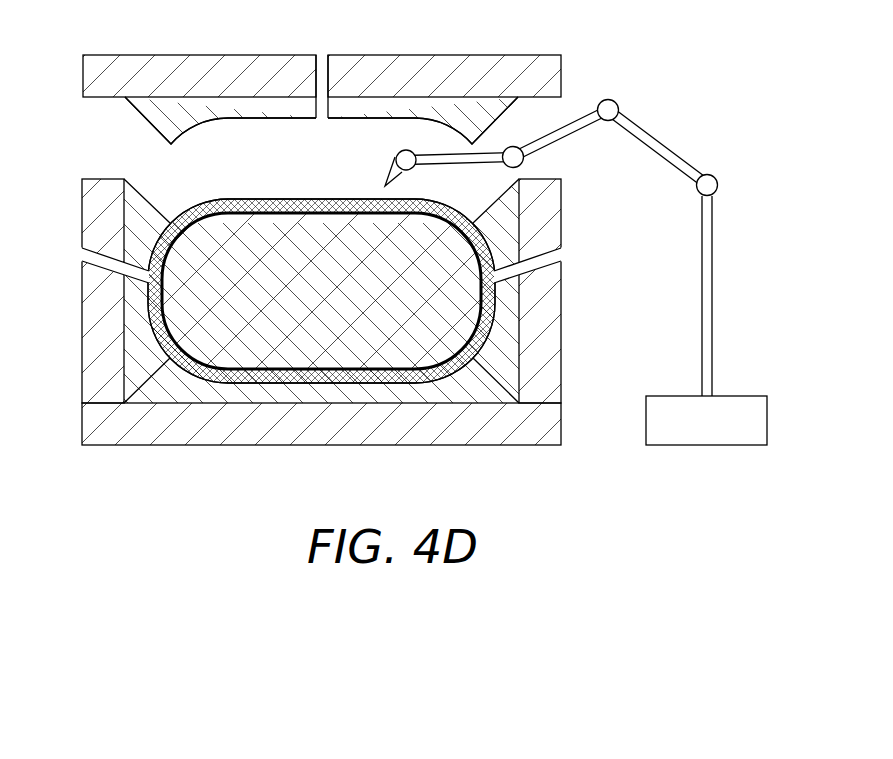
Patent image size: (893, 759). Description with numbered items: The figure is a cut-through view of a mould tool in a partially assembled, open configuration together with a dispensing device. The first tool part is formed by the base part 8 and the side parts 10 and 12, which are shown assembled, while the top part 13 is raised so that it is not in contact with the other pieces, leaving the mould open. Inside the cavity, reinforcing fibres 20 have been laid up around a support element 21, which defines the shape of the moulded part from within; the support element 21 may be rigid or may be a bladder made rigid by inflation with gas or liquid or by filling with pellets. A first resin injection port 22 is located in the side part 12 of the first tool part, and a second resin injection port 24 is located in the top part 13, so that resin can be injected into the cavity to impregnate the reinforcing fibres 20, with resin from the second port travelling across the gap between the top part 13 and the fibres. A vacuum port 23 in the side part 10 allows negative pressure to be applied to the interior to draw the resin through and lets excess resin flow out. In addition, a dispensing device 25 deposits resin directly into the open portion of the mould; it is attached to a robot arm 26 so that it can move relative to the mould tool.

The base part 8 is at (322, 436).
The side part 10 is at (93, 322).
The side part 12 is at (553, 322).
The top part 13 is at (451, 65).
The reinforcing fibres 20 is at (255, 377).
The support element 21 is at (382, 332).
The resin injection port 22 is at (566, 255).
The vacuum port 23 is at (78, 254).
The resin injection port 24 is at (322, 66).
The dispensing device 25 is at (396, 153).
The robot arm 26 is at (660, 127).